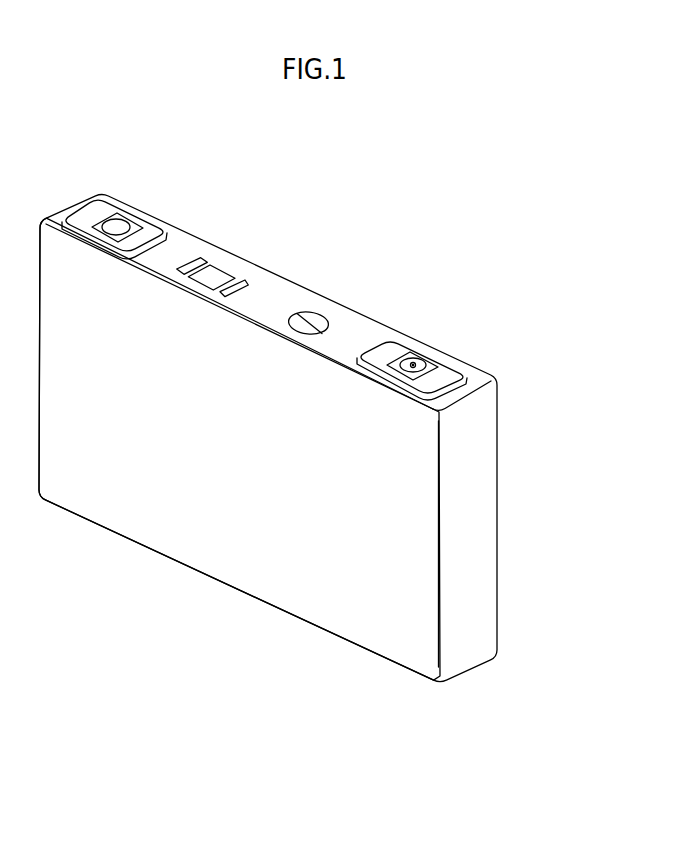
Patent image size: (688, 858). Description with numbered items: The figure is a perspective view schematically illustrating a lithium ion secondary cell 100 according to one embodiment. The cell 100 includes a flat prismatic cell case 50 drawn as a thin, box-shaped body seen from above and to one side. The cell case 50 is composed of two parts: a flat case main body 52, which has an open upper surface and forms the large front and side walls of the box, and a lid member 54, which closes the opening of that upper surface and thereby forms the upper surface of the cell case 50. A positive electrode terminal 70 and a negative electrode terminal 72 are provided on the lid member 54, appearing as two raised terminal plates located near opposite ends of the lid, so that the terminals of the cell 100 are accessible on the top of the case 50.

The lithium ion secondary cell 100 is at (500, 181).
The cell case 50 is at (282, 562).
The case main body 52 is at (190, 526).
The lid member 54 is at (267, 285).
The positive electrode terminal 70 is at (424, 358).
The negative electrode terminal 72 is at (125, 222).